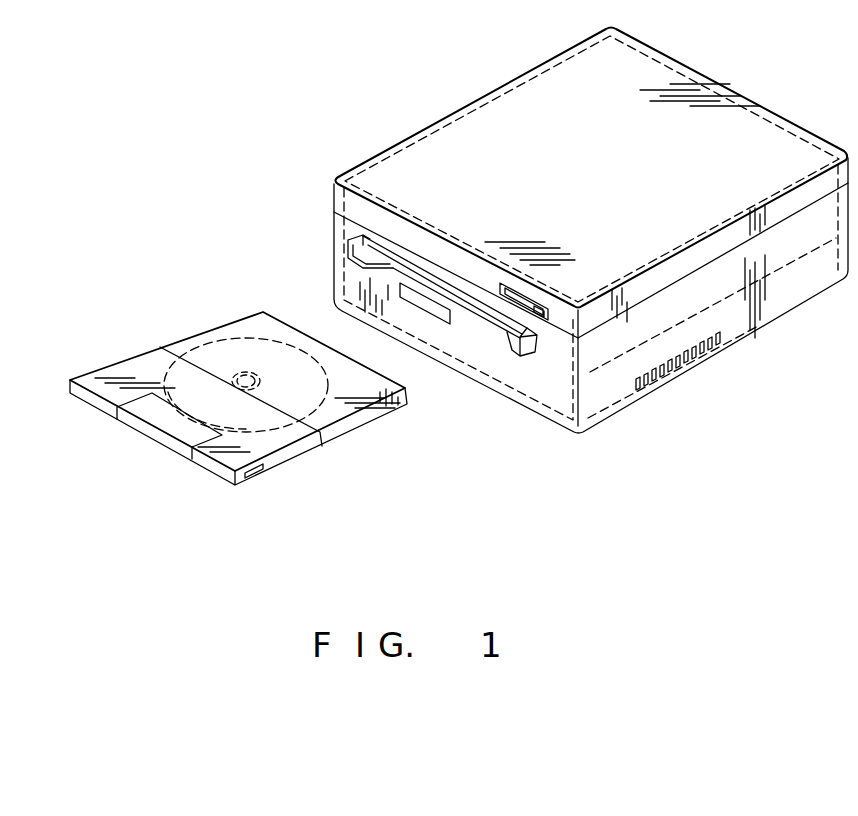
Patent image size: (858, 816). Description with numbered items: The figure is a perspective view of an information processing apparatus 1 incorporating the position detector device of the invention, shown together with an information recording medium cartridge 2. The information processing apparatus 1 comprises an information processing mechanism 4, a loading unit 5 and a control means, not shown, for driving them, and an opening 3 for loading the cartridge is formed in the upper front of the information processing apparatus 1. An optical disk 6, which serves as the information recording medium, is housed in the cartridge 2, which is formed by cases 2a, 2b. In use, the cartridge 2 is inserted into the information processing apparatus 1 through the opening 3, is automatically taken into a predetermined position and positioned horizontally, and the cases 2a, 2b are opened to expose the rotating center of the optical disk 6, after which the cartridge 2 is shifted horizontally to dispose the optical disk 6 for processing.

The information processing apparatus 1 is at (623, 393).
The information recording medium cartridge 2 is at (303, 455).
The case 2a is at (223, 460).
The case 2b is at (385, 403).
The opening 3 is at (473, 308).
The information processing mechanism 4 is at (822, 283).
The loading unit 5 is at (773, 272).
The optical disk 6 is at (220, 342).